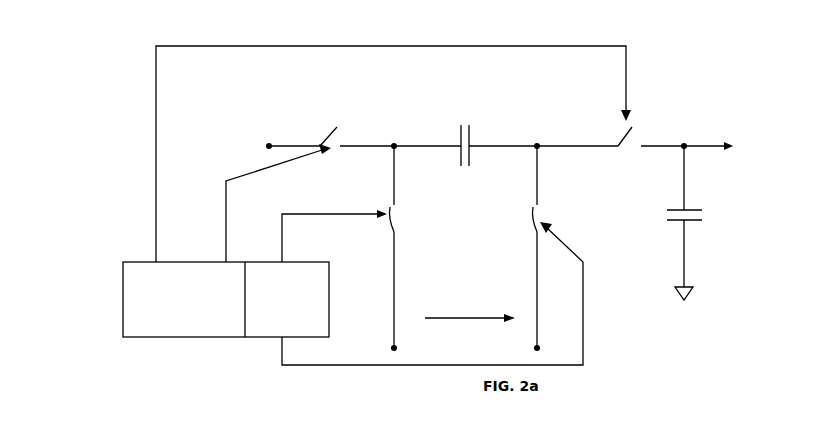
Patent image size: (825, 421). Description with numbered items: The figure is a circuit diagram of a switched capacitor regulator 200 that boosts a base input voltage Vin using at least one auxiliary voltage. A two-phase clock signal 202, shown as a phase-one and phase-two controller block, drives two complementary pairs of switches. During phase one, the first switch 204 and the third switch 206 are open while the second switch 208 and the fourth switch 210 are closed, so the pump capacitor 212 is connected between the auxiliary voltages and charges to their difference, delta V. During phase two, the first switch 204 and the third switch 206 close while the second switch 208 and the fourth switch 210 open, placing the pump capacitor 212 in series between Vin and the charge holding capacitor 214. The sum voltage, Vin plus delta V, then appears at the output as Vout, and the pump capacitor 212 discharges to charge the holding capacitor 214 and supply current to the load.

The switched capacitor regulator 200 is at (446, 203).
The two-phase clock signal 202 is at (197, 337).
The switch SW1 204 is at (325, 133).
The switch SW3 206 is at (618, 138).
The switch SW2 208 is at (390, 232).
The switch SW4 210 is at (533, 232).
The pump capacitor Cp 212 is at (460, 128).
The charge holding capacitor Co 214 is at (678, 222).